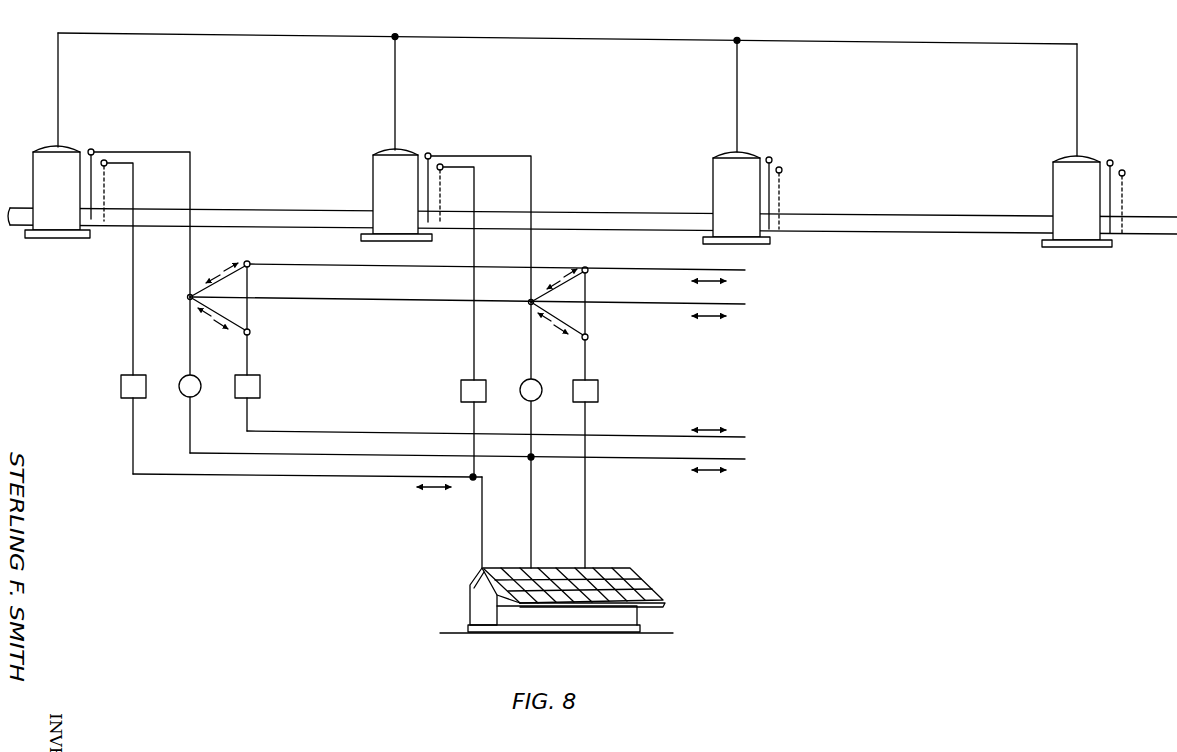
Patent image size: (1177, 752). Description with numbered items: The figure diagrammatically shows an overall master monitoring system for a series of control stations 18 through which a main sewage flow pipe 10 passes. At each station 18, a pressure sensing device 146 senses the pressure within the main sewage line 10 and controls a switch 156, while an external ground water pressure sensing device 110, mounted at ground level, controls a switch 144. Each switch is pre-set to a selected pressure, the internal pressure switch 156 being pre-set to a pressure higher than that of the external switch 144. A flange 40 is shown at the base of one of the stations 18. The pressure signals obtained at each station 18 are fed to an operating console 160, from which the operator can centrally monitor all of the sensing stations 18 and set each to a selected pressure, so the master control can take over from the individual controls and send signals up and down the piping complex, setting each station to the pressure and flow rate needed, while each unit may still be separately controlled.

The main sewage flow pipe 10 is at (145, 208).
The control station 18 is at (568, 196).
The flange 40 is at (432, 238).
The external ground water pressure sensing device 110 is at (94, 152).
The pressure sensing device 146 is at (104, 184).
The switch 156 is at (123, 375).
The switch 144 is at (183, 380).
The operating console 160 is at (628, 568).